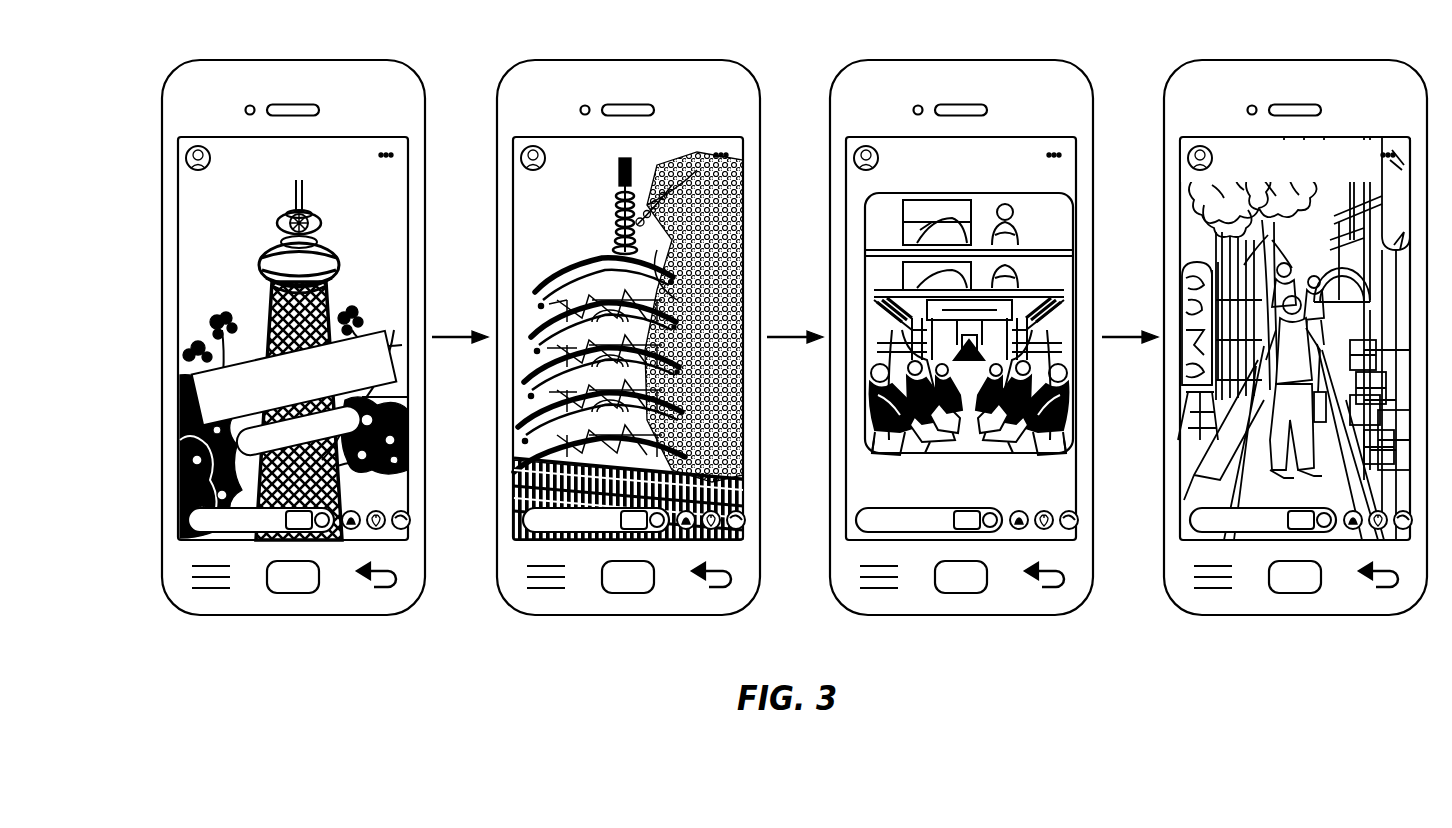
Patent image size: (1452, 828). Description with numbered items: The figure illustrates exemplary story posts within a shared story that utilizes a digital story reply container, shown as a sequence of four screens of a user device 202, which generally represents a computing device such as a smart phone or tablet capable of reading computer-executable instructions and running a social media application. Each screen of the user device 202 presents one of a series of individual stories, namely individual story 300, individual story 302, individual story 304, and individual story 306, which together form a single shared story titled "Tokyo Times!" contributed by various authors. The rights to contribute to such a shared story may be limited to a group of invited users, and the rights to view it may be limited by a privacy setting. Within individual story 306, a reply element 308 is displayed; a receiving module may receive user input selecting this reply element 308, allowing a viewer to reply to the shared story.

The user device 202 is at (1229, 60).
The individual story 300 is at (185, 200).
The individual story 302 is at (520, 200).
The individual story 304 is at (853, 200).
The individual story 306 is at (1186, 200).
The reply element 308 is at (1190, 520).